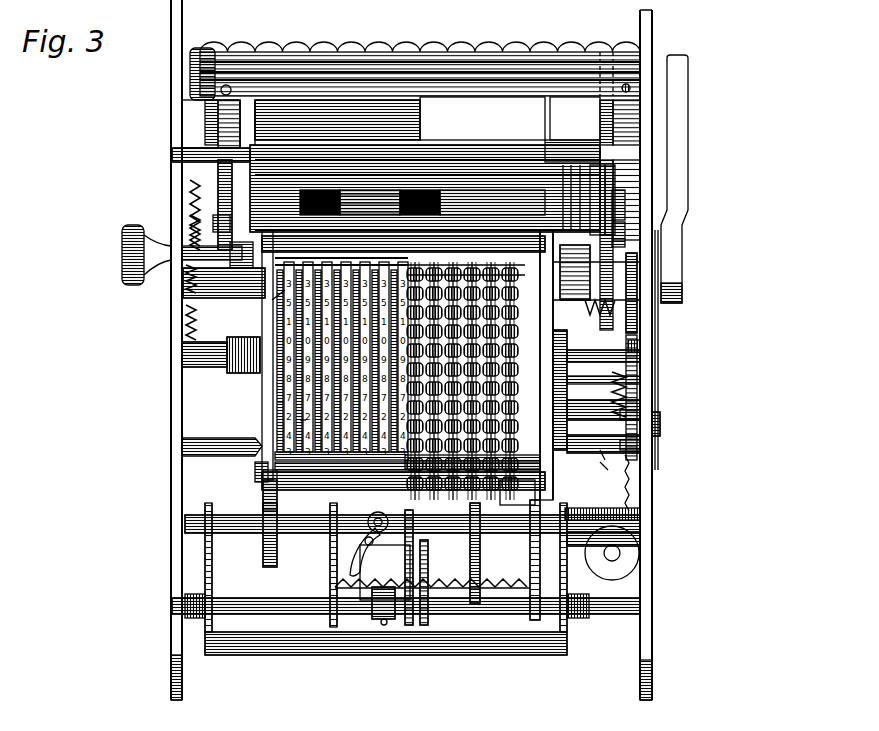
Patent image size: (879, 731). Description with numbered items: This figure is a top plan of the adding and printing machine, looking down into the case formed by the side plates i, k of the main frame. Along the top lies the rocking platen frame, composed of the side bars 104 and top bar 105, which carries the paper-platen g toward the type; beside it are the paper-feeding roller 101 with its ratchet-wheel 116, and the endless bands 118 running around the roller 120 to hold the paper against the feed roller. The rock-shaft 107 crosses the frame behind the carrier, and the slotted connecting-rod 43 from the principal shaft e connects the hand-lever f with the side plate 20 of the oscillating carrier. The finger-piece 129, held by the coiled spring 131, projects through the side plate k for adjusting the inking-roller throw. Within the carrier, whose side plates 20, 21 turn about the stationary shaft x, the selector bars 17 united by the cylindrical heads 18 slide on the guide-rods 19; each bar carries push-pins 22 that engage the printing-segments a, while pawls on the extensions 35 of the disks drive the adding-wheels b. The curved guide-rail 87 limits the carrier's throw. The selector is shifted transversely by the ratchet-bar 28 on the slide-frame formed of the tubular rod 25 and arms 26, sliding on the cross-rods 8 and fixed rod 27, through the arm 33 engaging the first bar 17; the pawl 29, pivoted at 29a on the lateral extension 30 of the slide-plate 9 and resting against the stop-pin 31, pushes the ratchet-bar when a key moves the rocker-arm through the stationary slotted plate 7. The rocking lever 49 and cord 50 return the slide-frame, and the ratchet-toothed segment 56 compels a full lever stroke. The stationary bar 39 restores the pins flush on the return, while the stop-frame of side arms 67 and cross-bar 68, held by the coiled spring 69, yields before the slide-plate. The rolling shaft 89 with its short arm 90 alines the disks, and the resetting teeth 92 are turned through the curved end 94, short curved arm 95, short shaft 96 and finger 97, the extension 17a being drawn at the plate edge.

The top bar 105 is at (206, 55).
The side bars 104 is at (203, 118).
The ratchet-wheel 116 is at (200, 128).
The hand-lever f is at (677, 155).
The side plate k is at (168, 394).
The paper-platen g is at (405, 124).
The roller 101 is at (440, 150).
The endless bands 118 is at (420, 198).
The cylindrical heads 18 is at (503, 240).
The roller 120 is at (553, 140).
The rock-shaft 107 is at (622, 215).
The slotted connecting-rod 43 is at (622, 238).
The finger-piece 129 is at (182, 272).
The coiled spring 131 is at (182, 327).
The principal shaft e is at (224, 293).
The ear or extension 35 is at (274, 303).
The stationary shaft x is at (221, 362).
The adding-wheels b is at (276, 372).
The side plate 21 is at (270, 402).
The printing-segments a is at (282, 424).
The teeth or pins 92 is at (228, 452).
The short arm 90 is at (255, 465).
The rolling shaft 89 is at (262, 485).
The guide-rods 19 is at (403, 375).
The curved guide-rail 87 is at (430, 502).
The bars 17 is at (556, 360).
The curved outer end 94 is at (616, 322).
The side plate 20 is at (635, 400).
The stationary bar 39 is at (602, 464).
The push-pins 22 is at (630, 378).
The ratchet-toothed segment 56 is at (630, 332).
The side plate i is at (656, 338).
The rocking lever 49 is at (640, 350).
The short curved arm 95 is at (640, 409).
The lever or finger 97 is at (661, 430).
The short shaft 96 is at (640, 445).
The cord 50 is at (650, 470).
The fixed rod 27 is at (246, 532).
The side arms 67 is at (212, 585).
The arms 26 is at (330, 587).
The cross-rods 8 is at (238, 600).
The cross-bar 68 is at (312, 648).
The pivot 29a is at (390, 514).
The stop-pin 31 is at (364, 541).
The pawl 29 is at (366, 561).
The lateral extension 30 is at (385, 585).
The ratchet-bar 28 is at (432, 570).
The slide-plate 9 is at (409, 626).
The stationary slotted plate 7 is at (424, 626).
The tubular rod 25 is at (474, 532).
The arm 33 is at (540, 495).
The coiled spring 69 is at (637, 515).
The plate extension 17a is at (602, 464).